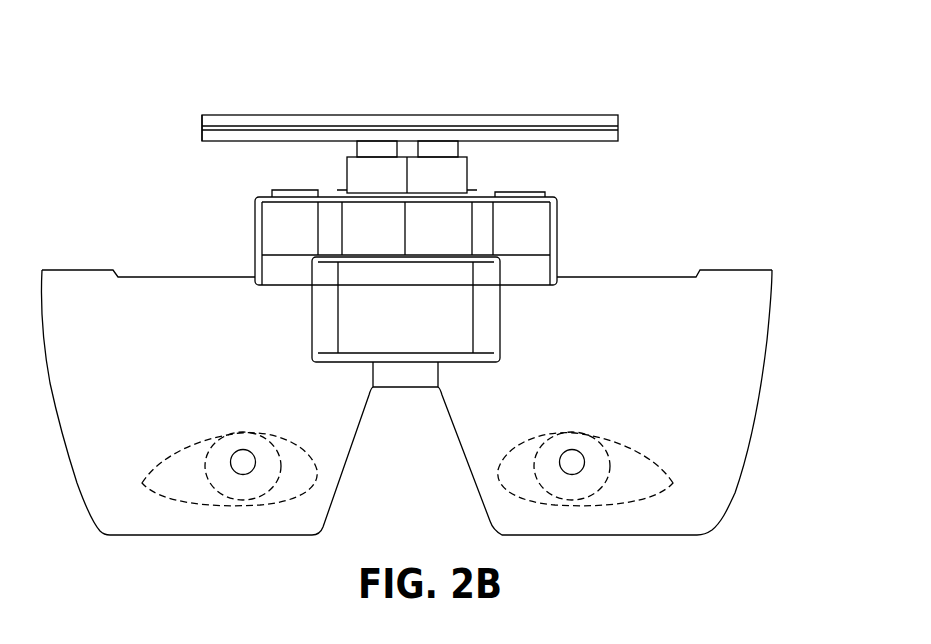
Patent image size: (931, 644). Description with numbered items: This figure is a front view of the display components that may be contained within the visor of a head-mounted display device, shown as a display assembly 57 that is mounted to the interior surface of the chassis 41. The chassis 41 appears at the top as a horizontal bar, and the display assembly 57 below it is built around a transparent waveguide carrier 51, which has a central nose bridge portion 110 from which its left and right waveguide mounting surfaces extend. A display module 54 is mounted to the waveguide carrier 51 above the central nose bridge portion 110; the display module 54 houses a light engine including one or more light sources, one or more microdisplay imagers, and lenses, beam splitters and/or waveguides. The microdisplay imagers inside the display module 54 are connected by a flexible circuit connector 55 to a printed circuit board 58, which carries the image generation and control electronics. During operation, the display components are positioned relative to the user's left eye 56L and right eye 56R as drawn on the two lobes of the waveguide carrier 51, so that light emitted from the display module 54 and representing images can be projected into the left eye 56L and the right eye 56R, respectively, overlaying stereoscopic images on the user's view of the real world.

The chassis 41 is at (583, 115).
The waveguide carrier 51 is at (737, 492).
The display module 54 is at (557, 228).
The flexible circuit connector 55 is at (345, 182).
The right eye 56R is at (283, 457).
The left eye 56L is at (607, 458).
The display assembly 57 is at (652, 192).
The printed circuit board 58 is at (227, 142).
The central nose bridge portion 110 is at (398, 387).